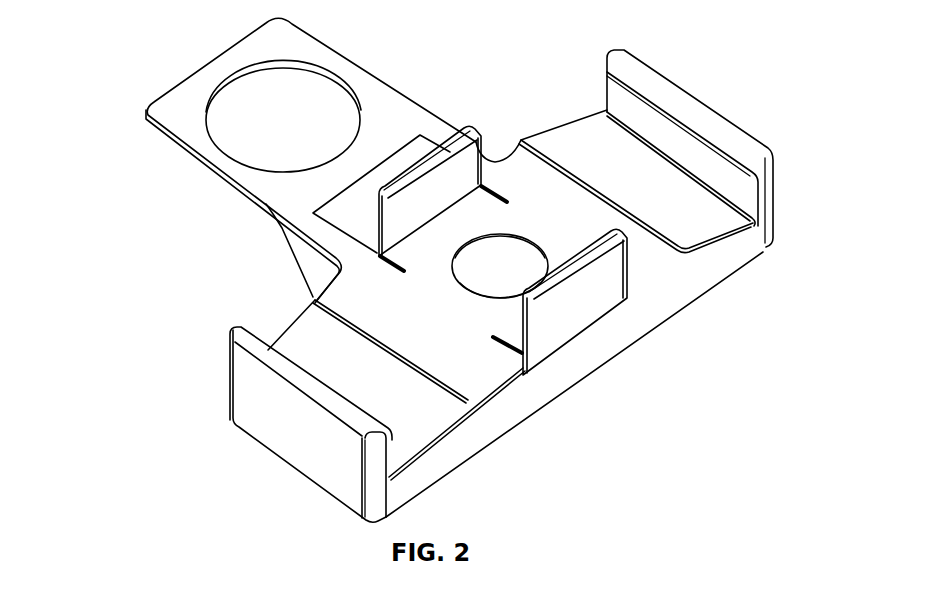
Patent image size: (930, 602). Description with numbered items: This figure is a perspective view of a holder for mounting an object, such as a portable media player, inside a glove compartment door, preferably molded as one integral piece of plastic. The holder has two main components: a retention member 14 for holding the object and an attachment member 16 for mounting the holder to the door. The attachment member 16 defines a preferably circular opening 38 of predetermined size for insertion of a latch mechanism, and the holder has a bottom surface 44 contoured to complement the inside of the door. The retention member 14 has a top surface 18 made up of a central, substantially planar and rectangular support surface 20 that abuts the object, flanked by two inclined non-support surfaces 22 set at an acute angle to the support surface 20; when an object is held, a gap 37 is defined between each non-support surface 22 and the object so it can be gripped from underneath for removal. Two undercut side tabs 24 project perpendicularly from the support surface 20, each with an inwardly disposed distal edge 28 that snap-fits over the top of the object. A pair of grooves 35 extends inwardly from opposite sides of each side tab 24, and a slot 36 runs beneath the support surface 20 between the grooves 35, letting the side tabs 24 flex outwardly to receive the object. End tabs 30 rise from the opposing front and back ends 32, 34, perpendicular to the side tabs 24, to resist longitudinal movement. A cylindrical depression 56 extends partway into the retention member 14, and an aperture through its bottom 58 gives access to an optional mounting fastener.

The retention member 14 is at (494, 134).
The attachment member 16 is at (155, 173).
The top surface 18 is at (638, 262).
The support surface 20 is at (407, 343).
The non-support surface 22 is at (455, 418).
The side tab 24 is at (423, 207).
The distal edge 28 is at (460, 132).
The end tab 30 is at (260, 425).
The front end 32 is at (723, 173).
The back end 34 is at (322, 470).
The groove 35 is at (495, 185).
The slot 36 is at (377, 248).
The gap 37 is at (340, 343).
The opening 38 is at (308, 103).
The bottom surface 44 is at (280, 250).
The cylindrical depression 56 is at (493, 253).
The bottom of the cylindrical depression 58 is at (505, 298).